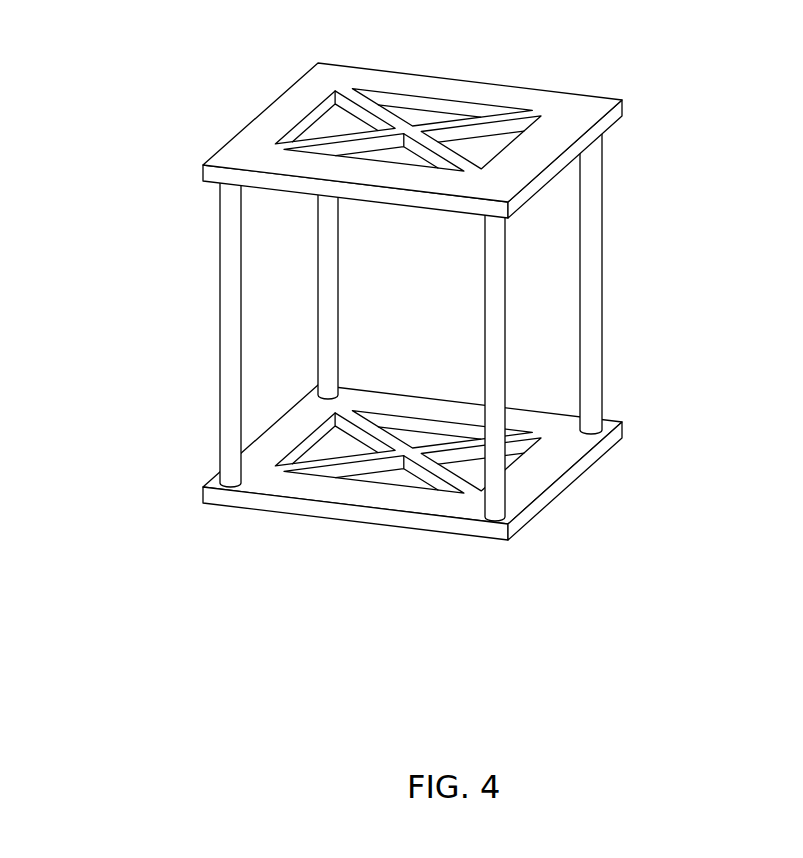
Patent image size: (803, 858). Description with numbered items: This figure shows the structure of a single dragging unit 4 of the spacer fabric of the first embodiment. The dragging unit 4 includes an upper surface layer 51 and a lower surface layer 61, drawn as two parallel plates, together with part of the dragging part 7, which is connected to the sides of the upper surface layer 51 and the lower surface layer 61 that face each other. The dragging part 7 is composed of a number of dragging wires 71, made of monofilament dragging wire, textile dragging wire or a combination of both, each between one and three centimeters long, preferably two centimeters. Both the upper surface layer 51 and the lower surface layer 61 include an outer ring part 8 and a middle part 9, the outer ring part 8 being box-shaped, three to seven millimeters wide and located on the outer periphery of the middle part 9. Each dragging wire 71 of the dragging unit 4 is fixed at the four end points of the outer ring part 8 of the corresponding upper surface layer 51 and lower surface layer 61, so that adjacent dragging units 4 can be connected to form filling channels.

The dragging unit 4 is at (374, 322).
The upper surface layer 51 is at (357, 111).
The lower surface layer 61 is at (185, 494).
The dragging part 7 is at (386, 298).
The dragging wire 71 is at (590, 290).
The outer ring part 8 is at (437, 103).
The middle part 9 is at (467, 122).